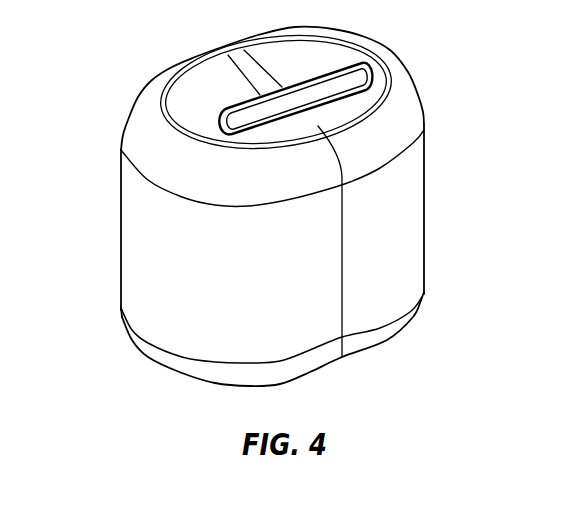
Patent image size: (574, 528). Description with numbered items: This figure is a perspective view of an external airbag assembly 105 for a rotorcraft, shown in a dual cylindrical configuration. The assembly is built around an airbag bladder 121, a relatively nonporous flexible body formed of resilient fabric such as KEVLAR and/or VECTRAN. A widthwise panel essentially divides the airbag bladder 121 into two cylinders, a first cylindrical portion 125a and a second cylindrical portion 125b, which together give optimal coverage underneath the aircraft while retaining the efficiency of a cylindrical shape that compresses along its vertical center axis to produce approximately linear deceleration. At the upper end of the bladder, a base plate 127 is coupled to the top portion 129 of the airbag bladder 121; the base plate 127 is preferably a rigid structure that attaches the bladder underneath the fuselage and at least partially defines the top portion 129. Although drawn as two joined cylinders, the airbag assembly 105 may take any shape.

The airbag assembly 105 is at (270, 214).
The airbag bladder 121 is at (424, 213).
The first cylindrical portion 125a is at (122, 228).
The second cylindrical portion 125b is at (424, 163).
The base plate 127 is at (231, 108).
The top portion 129 is at (300, 60).